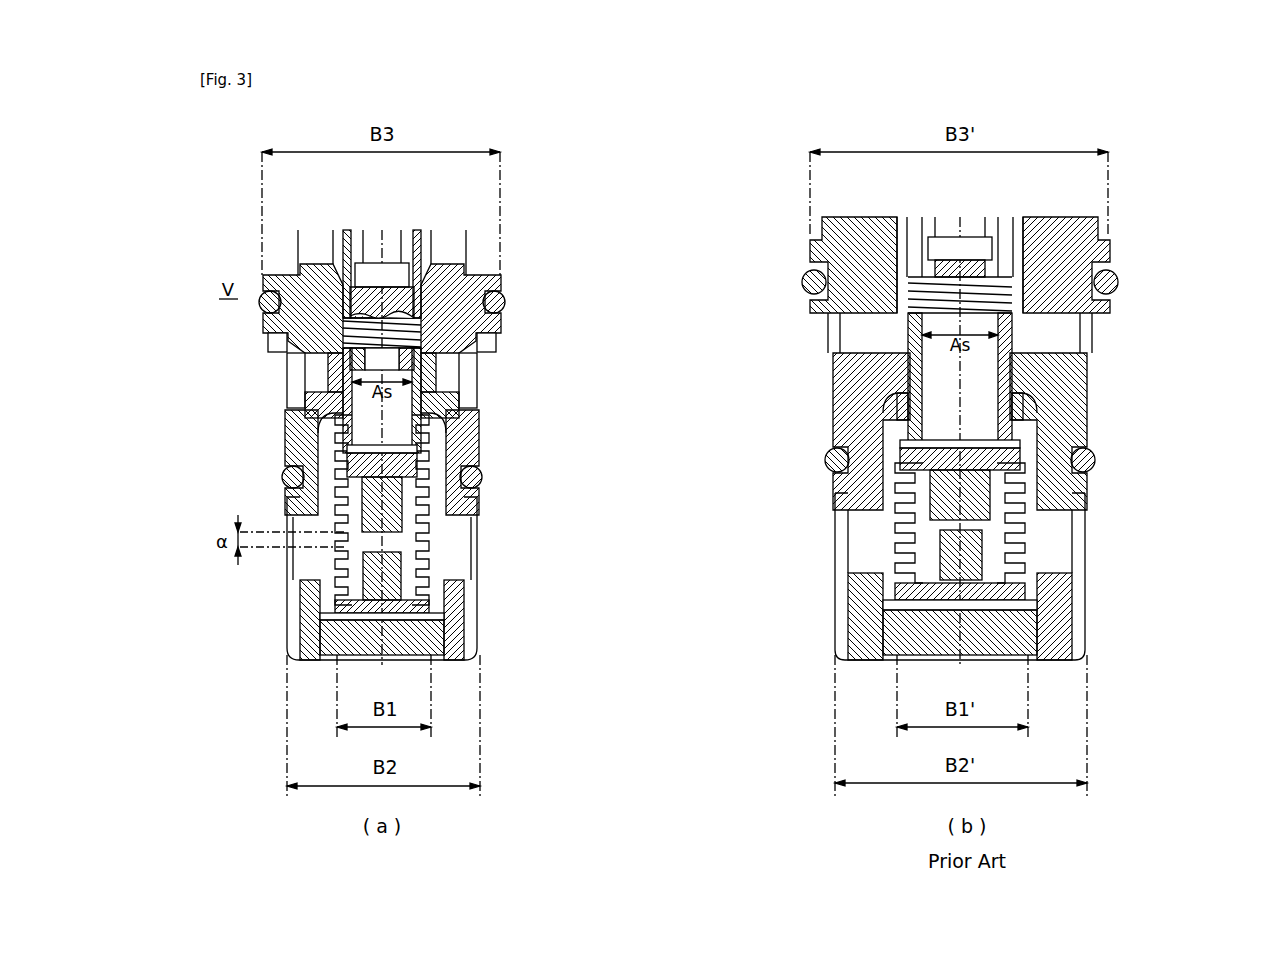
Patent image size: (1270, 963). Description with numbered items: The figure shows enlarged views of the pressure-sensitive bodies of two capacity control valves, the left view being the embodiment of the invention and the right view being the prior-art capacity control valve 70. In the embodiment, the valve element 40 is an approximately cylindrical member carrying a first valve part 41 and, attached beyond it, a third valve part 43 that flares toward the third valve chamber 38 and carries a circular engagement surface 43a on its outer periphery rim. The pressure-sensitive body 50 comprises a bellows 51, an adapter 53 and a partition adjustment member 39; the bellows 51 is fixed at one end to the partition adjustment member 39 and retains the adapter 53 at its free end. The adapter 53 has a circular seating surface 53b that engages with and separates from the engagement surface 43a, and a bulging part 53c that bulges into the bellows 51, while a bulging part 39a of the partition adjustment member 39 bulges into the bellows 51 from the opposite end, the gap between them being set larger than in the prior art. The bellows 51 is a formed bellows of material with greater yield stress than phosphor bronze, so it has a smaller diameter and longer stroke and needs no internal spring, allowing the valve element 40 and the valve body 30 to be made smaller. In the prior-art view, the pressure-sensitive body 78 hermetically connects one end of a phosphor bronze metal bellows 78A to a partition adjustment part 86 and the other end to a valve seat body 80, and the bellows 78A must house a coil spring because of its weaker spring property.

The valve body 30 is at (487, 276).
The third valve chamber 38 is at (287, 483).
The partition adjustment member 39 is at (443, 627).
The bulging part 39a is at (340, 552).
The valve element 40 is at (423, 319).
The first valve part 41 is at (420, 365).
The third valve part 43 is at (310, 396).
The engagement surface 43a is at (440, 432).
The pressure-sensitive body 50 is at (430, 533).
The bellows 51 is at (422, 562).
The adapter 53 is at (337, 448).
The circular seating surface 53b is at (432, 449).
The bulging part 53c is at (397, 517).
The capacity control valve 70 is at (1118, 252).
The pressure-sensitive body 78 is at (1028, 527).
The metal bellows 78A is at (1023, 553).
The valve seat body 80 is at (1095, 462).
The partition adjustment part 86 is at (1020, 630).